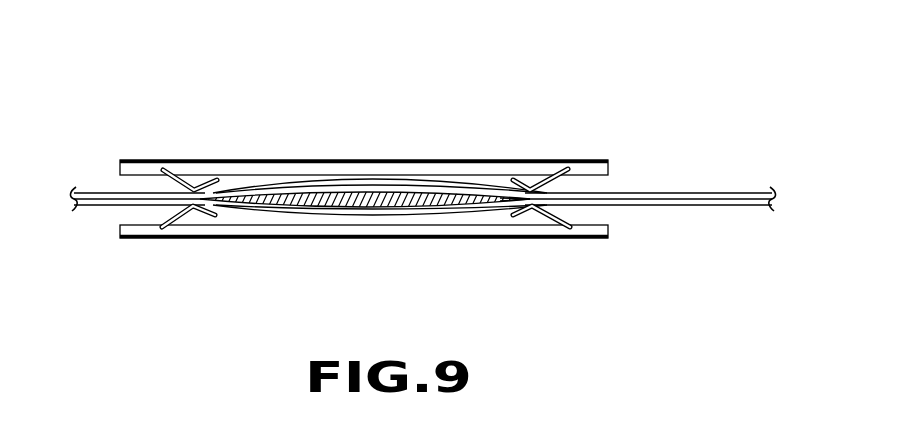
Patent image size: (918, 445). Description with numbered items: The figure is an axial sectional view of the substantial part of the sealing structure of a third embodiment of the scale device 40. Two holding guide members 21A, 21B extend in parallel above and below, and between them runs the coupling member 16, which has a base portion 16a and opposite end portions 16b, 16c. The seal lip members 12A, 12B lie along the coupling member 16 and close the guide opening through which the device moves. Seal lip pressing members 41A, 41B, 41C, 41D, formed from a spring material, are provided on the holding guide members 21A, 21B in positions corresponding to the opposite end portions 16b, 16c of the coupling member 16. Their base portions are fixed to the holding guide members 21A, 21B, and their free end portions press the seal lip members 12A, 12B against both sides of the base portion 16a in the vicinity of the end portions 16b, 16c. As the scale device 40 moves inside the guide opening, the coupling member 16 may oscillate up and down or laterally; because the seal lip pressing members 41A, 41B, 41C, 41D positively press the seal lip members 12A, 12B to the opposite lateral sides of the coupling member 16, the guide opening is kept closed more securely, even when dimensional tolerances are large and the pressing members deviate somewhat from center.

The scale device 40 is at (366, 70).
The seal lip member 12A is at (89, 192).
The seal lip member 12B is at (91, 207).
The coupling member 16 is at (318, 200).
The base portion 16a is at (317, 182).
The end portion 16b is at (240, 210).
The end portion 16c is at (501, 207).
The holding guide member 21A is at (412, 162).
The holding guide member 21B is at (406, 238).
The seal lip pressing member 41A is at (182, 176).
The seal lip pressing member 41B is at (553, 173).
The seal lip pressing member 41C is at (177, 228).
The seal lip pressing member 41D is at (551, 225).